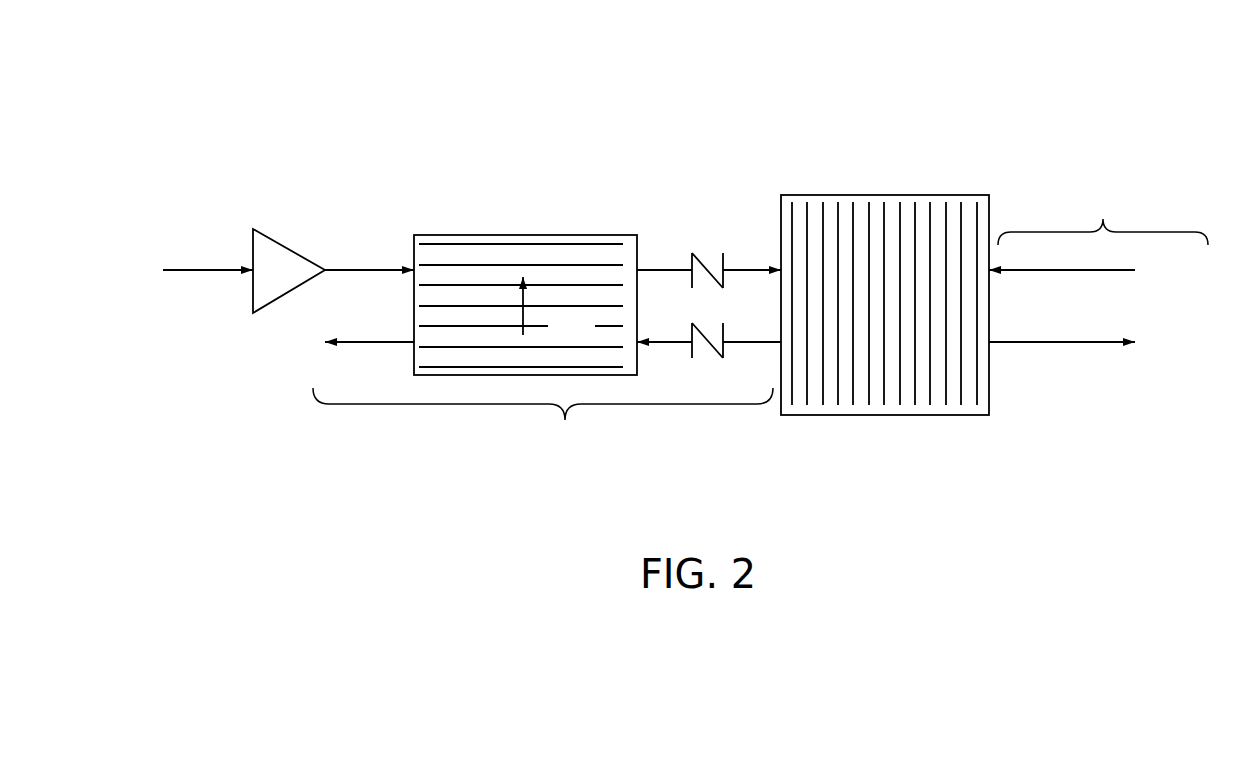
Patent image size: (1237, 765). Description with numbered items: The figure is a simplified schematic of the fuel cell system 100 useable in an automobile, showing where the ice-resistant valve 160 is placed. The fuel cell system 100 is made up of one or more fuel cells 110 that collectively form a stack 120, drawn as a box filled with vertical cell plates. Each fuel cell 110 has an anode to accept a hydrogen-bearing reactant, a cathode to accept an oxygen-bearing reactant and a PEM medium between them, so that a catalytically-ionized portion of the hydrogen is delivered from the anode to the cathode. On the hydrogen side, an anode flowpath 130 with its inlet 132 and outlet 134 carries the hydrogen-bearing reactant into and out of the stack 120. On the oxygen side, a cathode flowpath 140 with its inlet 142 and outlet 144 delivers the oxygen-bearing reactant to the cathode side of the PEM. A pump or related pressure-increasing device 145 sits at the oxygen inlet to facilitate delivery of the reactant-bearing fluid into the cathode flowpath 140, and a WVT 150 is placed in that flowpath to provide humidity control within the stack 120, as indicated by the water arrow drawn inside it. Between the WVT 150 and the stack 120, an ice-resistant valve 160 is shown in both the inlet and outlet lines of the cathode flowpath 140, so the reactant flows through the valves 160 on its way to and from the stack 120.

The fuel cell system 100 is at (345, 138).
The fuel cell 110 is at (917, 397).
The stack 120 is at (885, 175).
The anode flowpath 130 is at (1103, 217).
The inlet 132 is at (1052, 271).
The outlet 134 is at (1055, 343).
The cathode flowpath 140 is at (543, 421).
The inlet 142 is at (352, 270).
The outlet 144 is at (362, 342).
The pump or pressure-increasing device 145 is at (253, 248).
The WVT 150 is at (515, 235).
The ice-resistant valve 160 is at (709, 256).